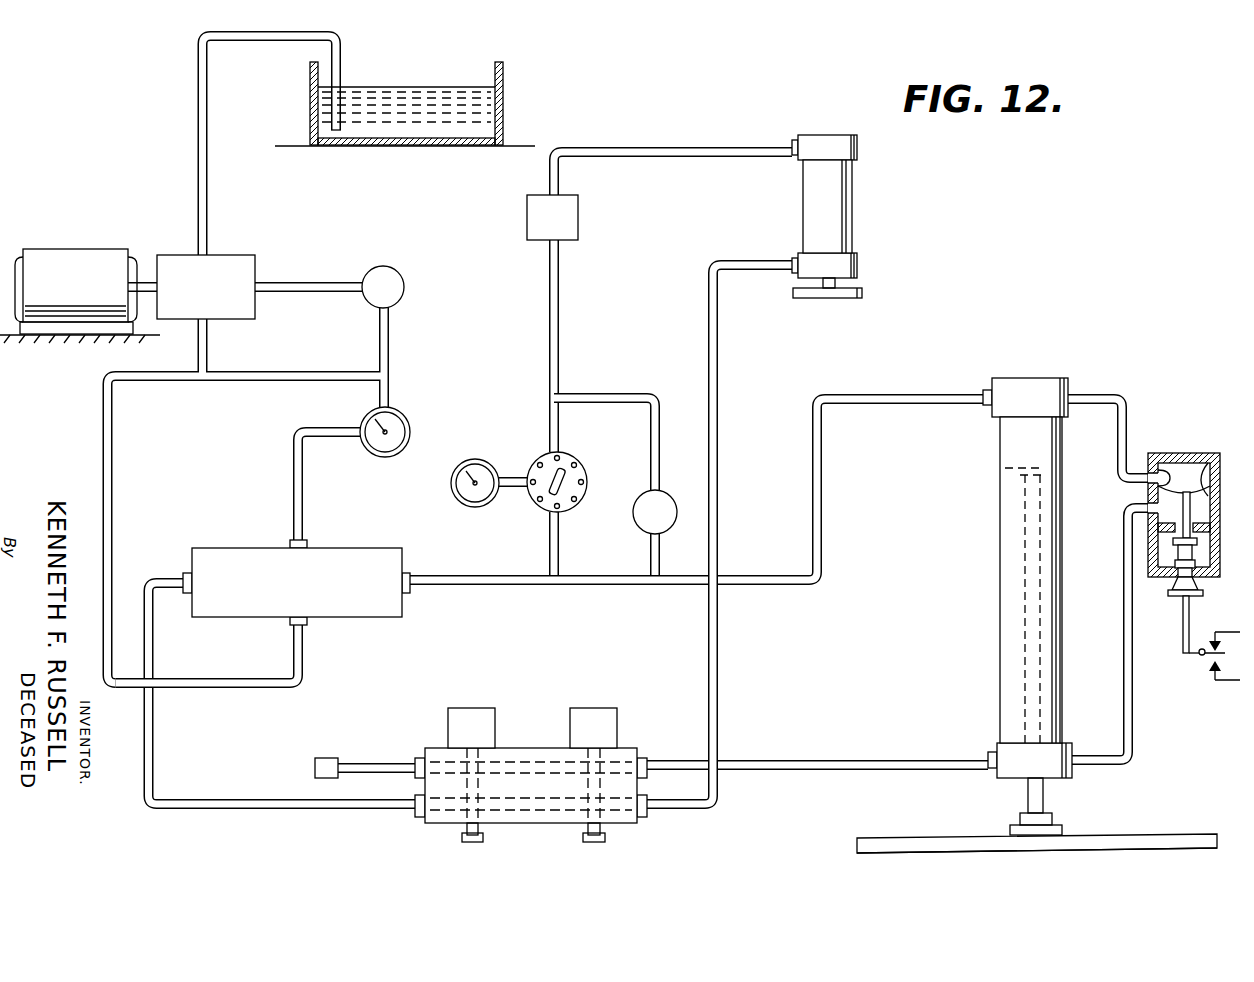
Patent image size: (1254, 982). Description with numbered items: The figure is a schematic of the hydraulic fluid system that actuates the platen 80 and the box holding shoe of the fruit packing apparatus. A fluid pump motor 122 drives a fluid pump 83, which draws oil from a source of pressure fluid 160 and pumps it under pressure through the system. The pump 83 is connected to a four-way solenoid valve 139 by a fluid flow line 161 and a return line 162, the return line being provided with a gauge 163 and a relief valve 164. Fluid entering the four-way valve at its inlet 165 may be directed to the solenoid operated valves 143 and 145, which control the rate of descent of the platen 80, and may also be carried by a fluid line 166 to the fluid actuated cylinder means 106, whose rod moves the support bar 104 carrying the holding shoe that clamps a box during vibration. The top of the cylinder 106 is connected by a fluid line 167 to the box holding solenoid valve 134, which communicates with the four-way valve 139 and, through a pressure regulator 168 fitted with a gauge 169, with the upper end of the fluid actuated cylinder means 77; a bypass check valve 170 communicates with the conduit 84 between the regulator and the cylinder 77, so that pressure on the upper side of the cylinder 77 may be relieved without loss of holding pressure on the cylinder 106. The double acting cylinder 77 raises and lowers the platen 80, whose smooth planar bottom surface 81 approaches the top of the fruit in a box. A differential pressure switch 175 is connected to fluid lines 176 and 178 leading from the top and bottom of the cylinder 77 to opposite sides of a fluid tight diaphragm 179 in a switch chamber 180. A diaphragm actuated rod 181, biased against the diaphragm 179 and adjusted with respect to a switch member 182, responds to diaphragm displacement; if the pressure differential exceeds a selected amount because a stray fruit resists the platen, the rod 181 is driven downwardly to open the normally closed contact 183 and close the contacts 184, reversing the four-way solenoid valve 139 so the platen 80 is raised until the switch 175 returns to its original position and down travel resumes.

The source of pressure fluid 160 is at (508, 75).
The fluid pump motor 122 is at (66, 249).
The fluid pump 83 is at (240, 255).
The relief valve 164 is at (404, 285).
The fluid line 167 is at (686, 148).
The fluid actuated cylinder means 106 is at (857, 190).
The box holding solenoid valve 134 is at (578, 222).
The support bar 104 is at (866, 296).
The fluid line 176 is at (1100, 398).
The diaphragm 179 is at (1203, 461).
The differential pressure switch 175 is at (1185, 453).
The switch chamber 180 is at (1150, 484).
The conduit 84 is at (825, 528).
The fluid actuated cylinder means 77 is at (1005, 575).
The diaphragm actuated rod 181 is at (1183, 617).
The normally closed contact 183 is at (1212, 647).
The switch member 182 is at (1198, 656).
The contacts 184 is at (1212, 664).
The fluid line 178 is at (1094, 758).
The platen 80 is at (1145, 838).
The bottom surface 81 is at (937, 852).
The fluid line 166 is at (718, 665).
The fluid inlet of four-way valve 165 is at (306, 662).
The solenoid operated valve 143 is at (476, 712).
The solenoid operated valve 145 is at (590, 712).
The four-way solenoid valve 139 is at (252, 548).
The return line 162 is at (303, 492).
The fluid flow line 161 is at (113, 474).
The gauge 163 is at (412, 432).
The pressure regulator 168 is at (580, 462).
The gauge 169 is at (462, 502).
The bypass check valve 170 is at (645, 530).